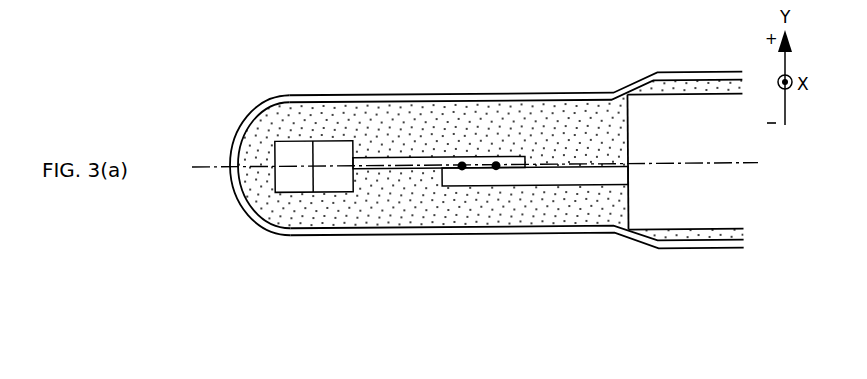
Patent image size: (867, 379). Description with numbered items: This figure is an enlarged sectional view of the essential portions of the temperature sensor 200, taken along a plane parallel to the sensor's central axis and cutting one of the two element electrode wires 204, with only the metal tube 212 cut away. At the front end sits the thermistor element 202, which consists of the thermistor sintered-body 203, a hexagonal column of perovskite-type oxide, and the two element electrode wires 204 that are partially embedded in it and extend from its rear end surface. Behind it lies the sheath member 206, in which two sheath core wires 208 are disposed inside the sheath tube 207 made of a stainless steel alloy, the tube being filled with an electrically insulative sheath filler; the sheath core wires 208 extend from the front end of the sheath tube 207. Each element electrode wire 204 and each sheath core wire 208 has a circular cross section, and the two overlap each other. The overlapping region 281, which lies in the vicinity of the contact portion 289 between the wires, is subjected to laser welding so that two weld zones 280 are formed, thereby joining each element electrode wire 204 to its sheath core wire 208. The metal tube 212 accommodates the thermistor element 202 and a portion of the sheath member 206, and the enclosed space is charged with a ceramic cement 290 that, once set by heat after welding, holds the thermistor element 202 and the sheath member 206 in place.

The temperature sensor 200 is at (247, 56).
The thermistor element 202 is at (427, 288).
The thermistor sintered-body 203 is at (290, 186).
The element electrode wire 204 is at (400, 168).
The sheath member 206 is at (698, 297).
The sheath tube 207 is at (677, 210).
The sheath core wire 208 is at (608, 174).
The metal tube 212 is at (565, 93).
The weld zone 280 is at (496, 169).
The overlapping region 281 is at (514, 178).
The contact portion 289 is at (447, 170).
The cement 290 is at (363, 119).